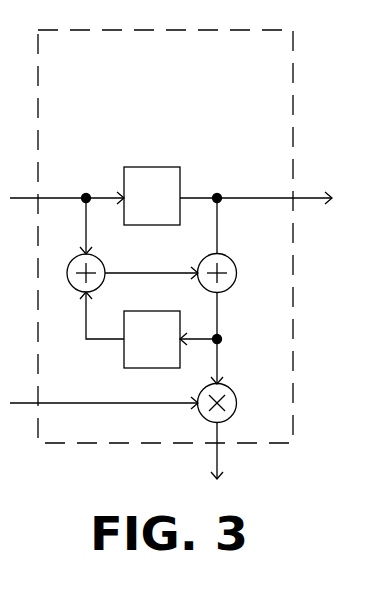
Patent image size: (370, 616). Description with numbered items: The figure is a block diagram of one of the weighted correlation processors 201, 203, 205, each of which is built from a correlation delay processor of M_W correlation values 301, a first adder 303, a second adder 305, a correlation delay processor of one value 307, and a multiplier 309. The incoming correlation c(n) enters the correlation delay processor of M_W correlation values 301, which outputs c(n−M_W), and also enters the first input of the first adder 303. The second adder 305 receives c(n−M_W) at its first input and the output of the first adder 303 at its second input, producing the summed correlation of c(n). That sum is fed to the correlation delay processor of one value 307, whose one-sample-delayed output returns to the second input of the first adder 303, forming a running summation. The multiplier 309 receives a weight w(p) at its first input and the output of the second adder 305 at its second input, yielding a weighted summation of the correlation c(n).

The weighted correlation processor 201 is at (165, 221).
The weighted correlation processor 203 is at (165, 221).
The weighted correlation processor 205 is at (165, 221).
The correlation delay processor of M_W correlation values 301 is at (157, 152).
The first adder 303 is at (99, 260).
The second adder 305 is at (230, 287).
The correlation delay processor of one value 307 is at (157, 296).
The multiplier 309 is at (203, 390).